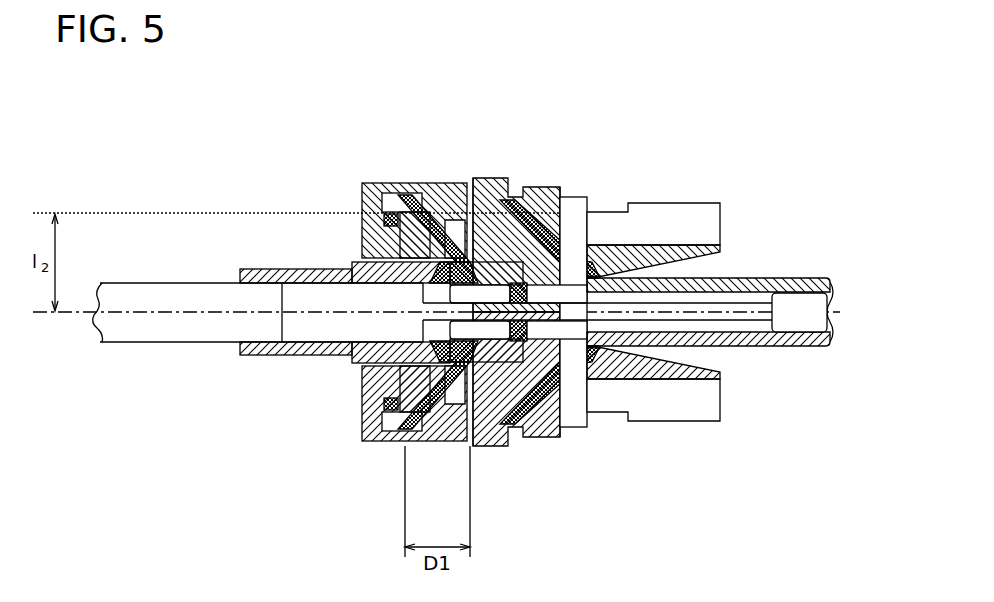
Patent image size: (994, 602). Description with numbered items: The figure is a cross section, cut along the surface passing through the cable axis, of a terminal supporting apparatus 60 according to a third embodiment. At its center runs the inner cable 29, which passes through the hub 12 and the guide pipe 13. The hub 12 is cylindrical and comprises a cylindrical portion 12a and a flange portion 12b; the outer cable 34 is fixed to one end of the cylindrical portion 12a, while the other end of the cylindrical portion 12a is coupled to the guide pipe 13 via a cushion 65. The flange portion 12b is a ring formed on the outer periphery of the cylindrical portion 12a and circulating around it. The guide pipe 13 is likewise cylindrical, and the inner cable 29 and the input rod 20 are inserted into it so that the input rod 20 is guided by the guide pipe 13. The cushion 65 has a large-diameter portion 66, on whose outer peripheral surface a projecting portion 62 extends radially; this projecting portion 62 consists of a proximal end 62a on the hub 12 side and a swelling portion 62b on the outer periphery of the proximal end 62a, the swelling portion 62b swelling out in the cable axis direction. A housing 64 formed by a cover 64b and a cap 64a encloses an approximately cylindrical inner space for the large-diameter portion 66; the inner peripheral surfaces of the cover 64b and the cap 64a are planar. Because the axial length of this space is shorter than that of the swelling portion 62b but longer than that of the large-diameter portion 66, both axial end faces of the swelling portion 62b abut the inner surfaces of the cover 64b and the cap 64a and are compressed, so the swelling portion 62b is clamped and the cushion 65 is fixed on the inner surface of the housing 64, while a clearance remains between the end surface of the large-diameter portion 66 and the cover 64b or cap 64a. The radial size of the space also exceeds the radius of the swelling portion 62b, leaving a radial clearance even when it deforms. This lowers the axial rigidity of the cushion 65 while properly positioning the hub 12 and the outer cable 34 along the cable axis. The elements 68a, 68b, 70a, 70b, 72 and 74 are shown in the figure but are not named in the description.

The hub 12 is at (342, 378).
The cylindrical portion 12a is at (260, 358).
The flange portion 12b is at (440, 445).
The guide pipe 13 is at (790, 278).
The input rod 20 is at (822, 300).
The inner cable 29 is at (747, 306).
The outer cable 34 is at (140, 343).
The terminal supporting apparatus 60 is at (676, 140).
The projecting portion 62 is at (385, 376).
The proximal end 62a is at (375, 444).
The swelling portion 62b is at (392, 444).
The housing 64 is at (491, 251).
The cap 64a is at (438, 190).
The cover 64b is at (517, 266).
The cushion 65 is at (520, 440).
The large-diameter portion 66 is at (472, 447).
The first collet 68a is at (355, 266).
The second collet 68b is at (512, 210).
The first seal 70a is at (352, 372).
The second seal 70b is at (550, 195).
The retainer 72 is at (432, 190).
The ring 74 is at (393, 190).